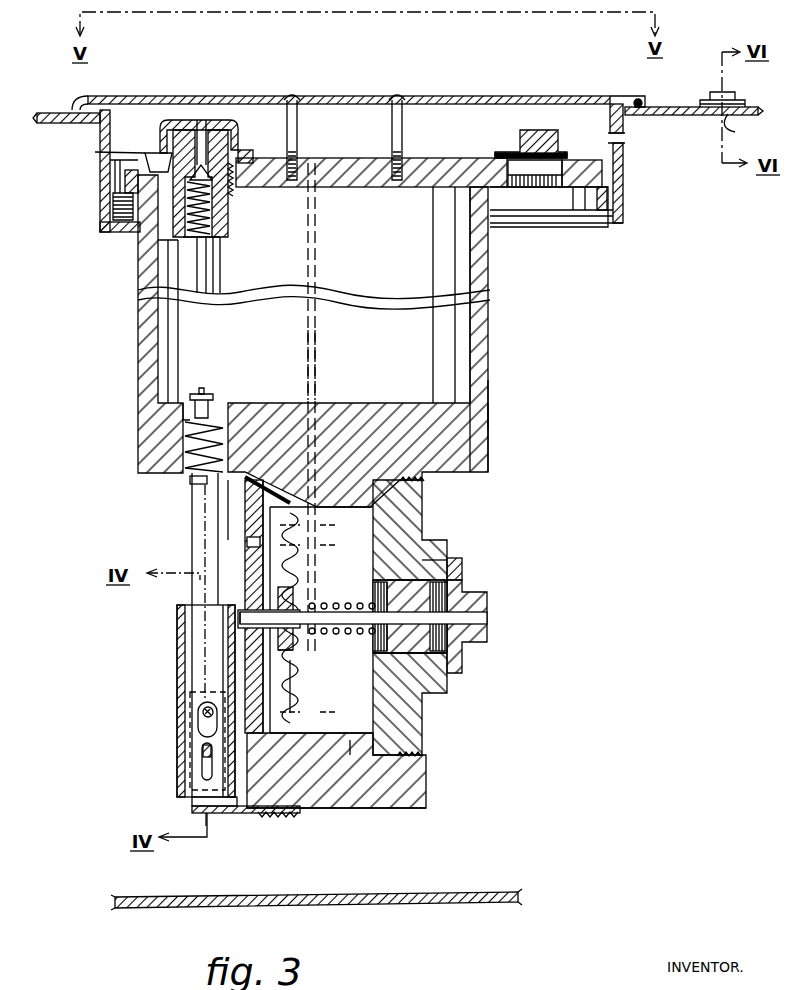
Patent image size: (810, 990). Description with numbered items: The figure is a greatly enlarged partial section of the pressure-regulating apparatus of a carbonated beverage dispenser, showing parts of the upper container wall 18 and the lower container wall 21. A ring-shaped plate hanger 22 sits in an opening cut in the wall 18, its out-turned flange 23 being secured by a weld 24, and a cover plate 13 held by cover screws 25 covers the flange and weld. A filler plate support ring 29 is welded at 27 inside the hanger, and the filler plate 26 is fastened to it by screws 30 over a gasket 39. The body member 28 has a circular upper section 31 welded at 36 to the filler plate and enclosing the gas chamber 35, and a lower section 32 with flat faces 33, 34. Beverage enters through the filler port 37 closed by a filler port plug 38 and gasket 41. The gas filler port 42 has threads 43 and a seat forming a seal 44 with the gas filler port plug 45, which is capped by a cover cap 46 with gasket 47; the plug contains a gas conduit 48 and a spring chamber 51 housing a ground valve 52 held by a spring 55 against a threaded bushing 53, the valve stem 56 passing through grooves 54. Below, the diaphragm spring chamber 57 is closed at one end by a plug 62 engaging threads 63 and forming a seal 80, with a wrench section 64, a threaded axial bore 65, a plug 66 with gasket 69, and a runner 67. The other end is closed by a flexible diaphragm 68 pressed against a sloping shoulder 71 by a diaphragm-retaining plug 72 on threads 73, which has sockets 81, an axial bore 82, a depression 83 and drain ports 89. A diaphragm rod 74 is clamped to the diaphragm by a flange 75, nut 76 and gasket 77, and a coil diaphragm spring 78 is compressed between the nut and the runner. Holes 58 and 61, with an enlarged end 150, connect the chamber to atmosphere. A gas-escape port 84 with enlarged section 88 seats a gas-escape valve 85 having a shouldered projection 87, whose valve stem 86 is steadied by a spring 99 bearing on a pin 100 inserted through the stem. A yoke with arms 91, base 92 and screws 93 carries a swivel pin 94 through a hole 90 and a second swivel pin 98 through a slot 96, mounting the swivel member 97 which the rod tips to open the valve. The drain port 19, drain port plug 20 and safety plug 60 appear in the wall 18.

The cover plate 13 is at (459, 96).
The upper container wall 18 is at (678, 107).
The drain port 19 is at (738, 131).
The drain port plug 20 is at (752, 110).
The lower container wall 21 is at (480, 896).
The plate hanger 22 is at (623, 162).
The out-turned flange 23 is at (619, 100).
The weld 24 is at (645, 100).
The cover screws 25 is at (396, 92).
The filler plate 26 is at (370, 165).
The weld 27 is at (612, 224).
The body member 28 is at (525, 405).
The filler plate support ring 29 is at (103, 207).
The screws 30 is at (598, 160).
The upper section 31 is at (490, 270).
The lower section 32 is at (426, 806).
The flat face 33 is at (216, 815).
The flat face 34 is at (439, 781).
The gas chamber 35 is at (455, 312).
The weld 36 is at (505, 205).
The filler port 37 is at (548, 190).
The filler port plug 38 is at (540, 130).
The gasket 39 is at (610, 196).
The gasket 41 is at (498, 155).
The gas filler port 42 is at (236, 182).
The threads 43 is at (234, 192).
The ground metal-to-metal seal 44 is at (253, 158).
The gas filler port plug 45 is at (235, 150).
The cover cap 46 is at (228, 124).
The gasket 47 is at (158, 152).
The gas conduit 48 is at (200, 130).
The spring chamber 51 is at (148, 250).
The ground valve 52 is at (95, 152).
The threaded bushing 53 is at (215, 238).
The gas-conducting grooves 54 is at (218, 250).
The spring 55 is at (140, 232).
The valve stem 56 is at (201, 252).
The diaphragm spring chamber 57 is at (350, 740).
The hole 58 is at (320, 662).
The safety plug 60 is at (740, 94).
The hole 61 is at (315, 360).
The plug 62 is at (420, 527).
The threads 63 is at (490, 446).
The projecting central section 64 is at (442, 548).
The threaded axial bore 65 is at (448, 662).
The plug 66 is at (487, 615).
The runner 67 is at (445, 572).
The flexible diaphragm 68 is at (300, 562).
The gasket 69 is at (462, 567).
The sloping shoulder 71 is at (321, 620).
The diaphragm-retaining plug 72 is at (250, 530).
The threads 73 is at (250, 481).
The diaphragm rod 74 is at (470, 622).
The diaphragm rod flange 75 is at (275, 602).
The diaphragm nut 76 is at (293, 597).
The gasket 77 is at (296, 650).
The coil diaphragm spring 78 is at (342, 604).
The ground metal-to-metal seal 80 is at (417, 490).
The sockets 81 is at (247, 542).
The axial bore 82 is at (238, 616).
The depression 83 is at (300, 678).
The gas-escape port 84 is at (215, 406).
The gas-escape valve 85 is at (188, 402).
The main gas-escape valve stem 86 is at (198, 506).
The shouldered projection 87 is at (205, 393).
The enlarged section 88 is at (242, 410).
The drain ports 89 is at (250, 518).
The hole 90 is at (200, 726).
The arms 91 is at (195, 802).
The base 92 is at (215, 826).
The screws 93 is at (286, 818).
The swivel pin 94 is at (204, 712).
The slot 96 is at (204, 771).
The swivel member 97 is at (177, 642).
The second swivel pin 98 is at (204, 752).
The spring 99 is at (185, 435).
The nut 100 is at (193, 482).
The enlarged threaded end 150 is at (314, 170).